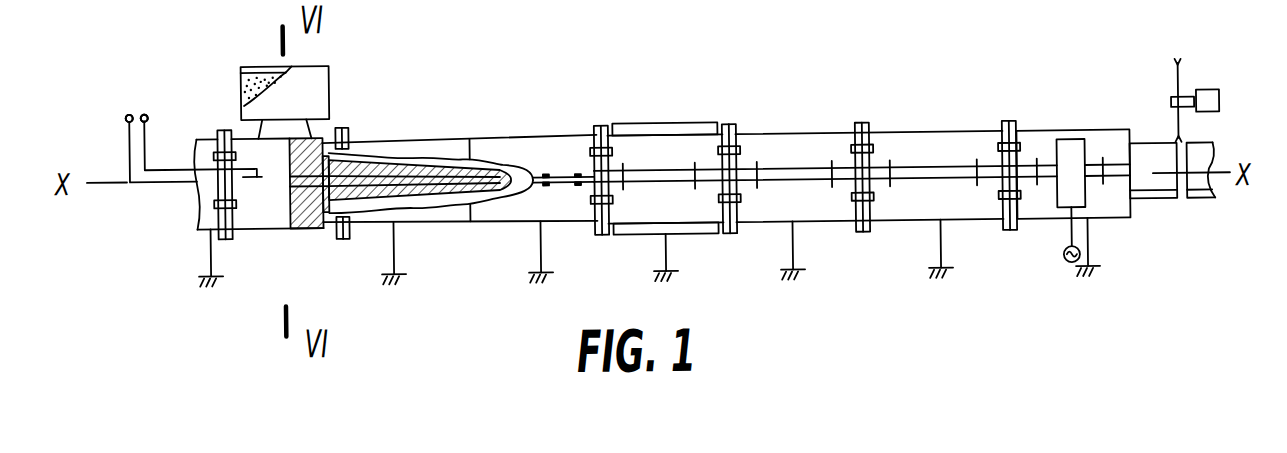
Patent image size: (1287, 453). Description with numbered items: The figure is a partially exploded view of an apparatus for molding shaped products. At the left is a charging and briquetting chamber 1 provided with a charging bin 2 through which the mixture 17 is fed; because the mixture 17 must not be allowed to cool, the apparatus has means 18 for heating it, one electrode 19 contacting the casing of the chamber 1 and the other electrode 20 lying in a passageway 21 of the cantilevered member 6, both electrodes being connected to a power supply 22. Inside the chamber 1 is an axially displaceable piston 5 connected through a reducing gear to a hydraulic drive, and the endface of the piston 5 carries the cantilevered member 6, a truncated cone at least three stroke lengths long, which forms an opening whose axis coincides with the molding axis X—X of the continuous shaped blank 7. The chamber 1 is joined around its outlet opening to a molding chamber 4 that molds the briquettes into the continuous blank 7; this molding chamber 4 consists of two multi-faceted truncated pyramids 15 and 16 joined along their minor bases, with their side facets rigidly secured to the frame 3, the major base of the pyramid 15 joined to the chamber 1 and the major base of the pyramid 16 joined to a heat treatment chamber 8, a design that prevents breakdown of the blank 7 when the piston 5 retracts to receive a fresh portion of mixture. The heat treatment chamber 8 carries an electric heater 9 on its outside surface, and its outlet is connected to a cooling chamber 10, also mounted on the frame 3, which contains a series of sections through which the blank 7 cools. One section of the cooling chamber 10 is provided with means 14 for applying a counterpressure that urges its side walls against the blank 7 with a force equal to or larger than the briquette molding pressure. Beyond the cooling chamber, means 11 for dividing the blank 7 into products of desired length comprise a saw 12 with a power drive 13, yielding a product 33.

The charging and briquetting chamber 1 is at (272, 222).
The charging bin 2 is at (318, 79).
The frame 3 is at (940, 258).
The molding chamber 4 is at (431, 129).
The piston 5 is at (305, 222).
The cantilevered member 6 is at (447, 195).
The continuous shaped blank 7 is at (1147, 194).
The heat treatment chamber 8 is at (675, 140).
The heater 9 is at (645, 129).
The cooling chamber 10 is at (895, 140).
The means for dividing the blank 11 is at (1182, 76).
The saw 12 is at (1179, 95).
The power drive 13 is at (1212, 104).
The counterpressure means 14 is at (1048, 243).
The truncated pyramid 15 is at (458, 220).
The truncated pyramid 16 is at (538, 212).
The mixture 17 is at (247, 67).
The means for heating the mixture 18 is at (163, 118).
The electrode 19 is at (146, 149).
The electrode 20 is at (128, 144).
The passageway 21 is at (388, 204).
The power supply 22 is at (152, 92).
The product 33 is at (1200, 191).